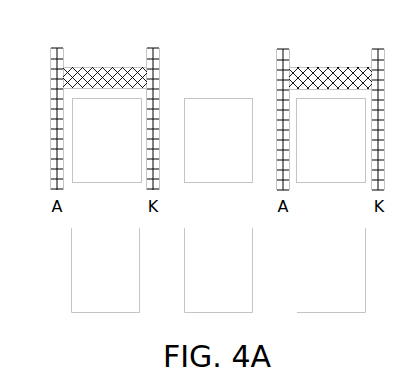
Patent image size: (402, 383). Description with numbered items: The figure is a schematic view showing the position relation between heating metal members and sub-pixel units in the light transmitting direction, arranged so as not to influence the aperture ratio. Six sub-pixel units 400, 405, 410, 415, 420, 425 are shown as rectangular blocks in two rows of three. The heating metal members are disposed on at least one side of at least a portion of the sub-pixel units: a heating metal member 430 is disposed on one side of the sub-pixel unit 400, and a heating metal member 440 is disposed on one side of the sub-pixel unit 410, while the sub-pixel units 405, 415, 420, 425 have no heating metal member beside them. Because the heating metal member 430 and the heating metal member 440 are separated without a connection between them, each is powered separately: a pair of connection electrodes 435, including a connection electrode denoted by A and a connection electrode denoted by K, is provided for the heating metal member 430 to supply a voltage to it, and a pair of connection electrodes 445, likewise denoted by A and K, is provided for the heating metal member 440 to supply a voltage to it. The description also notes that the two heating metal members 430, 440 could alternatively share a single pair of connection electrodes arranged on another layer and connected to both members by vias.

The sub-pixel unit 400 is at (107, 141).
The sub-pixel unit 405 is at (219, 141).
The sub-pixel unit 410 is at (331, 141).
The sub-pixel unit 415 is at (106, 270).
The sub-pixel unit 420 is at (219, 270).
The sub-pixel unit 425 is at (331, 270).
The heating metal member 430 is at (110, 76).
The pair of connection electrodes 435 is at (58, 80).
The heating metal member 440 is at (338, 72).
The pair of connection electrodes 445 is at (283, 75).